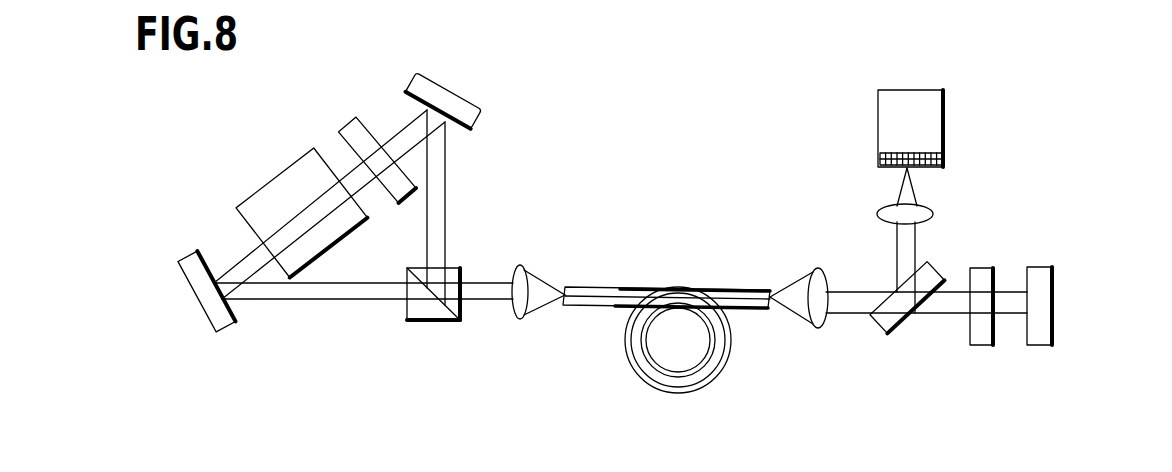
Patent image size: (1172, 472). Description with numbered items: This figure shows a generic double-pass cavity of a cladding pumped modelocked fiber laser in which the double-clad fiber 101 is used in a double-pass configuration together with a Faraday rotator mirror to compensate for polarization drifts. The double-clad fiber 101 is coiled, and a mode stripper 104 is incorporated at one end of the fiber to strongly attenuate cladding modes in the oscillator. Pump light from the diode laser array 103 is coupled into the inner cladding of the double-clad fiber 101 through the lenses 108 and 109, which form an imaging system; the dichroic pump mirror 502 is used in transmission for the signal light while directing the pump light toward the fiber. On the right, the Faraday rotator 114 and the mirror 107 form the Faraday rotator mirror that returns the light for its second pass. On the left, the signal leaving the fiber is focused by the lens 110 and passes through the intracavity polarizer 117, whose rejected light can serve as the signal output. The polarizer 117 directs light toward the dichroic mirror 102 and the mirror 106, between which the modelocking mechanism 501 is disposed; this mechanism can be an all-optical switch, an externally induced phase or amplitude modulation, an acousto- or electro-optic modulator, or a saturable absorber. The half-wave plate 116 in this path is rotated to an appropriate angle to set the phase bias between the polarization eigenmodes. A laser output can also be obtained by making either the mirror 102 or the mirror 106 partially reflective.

The modelocking mechanism 501 is at (273, 180).
The dichroic mirror 102 is at (452, 90).
The half-wave plate 116 is at (384, 190).
The mirror 106 is at (213, 328).
The intracavity polarizer 117 is at (432, 321).
The lens 110 is at (521, 320).
The mode stripper 104 is at (587, 287).
The double-clad fiber 101 is at (630, 360).
The lens 109 is at (817, 330).
The dichroic pump mirror 502 is at (904, 329).
The lens 108 is at (880, 219).
The diode laser array 103 is at (945, 112).
The Faraday rotator 114 is at (980, 268).
The mirror 107 is at (1030, 345).